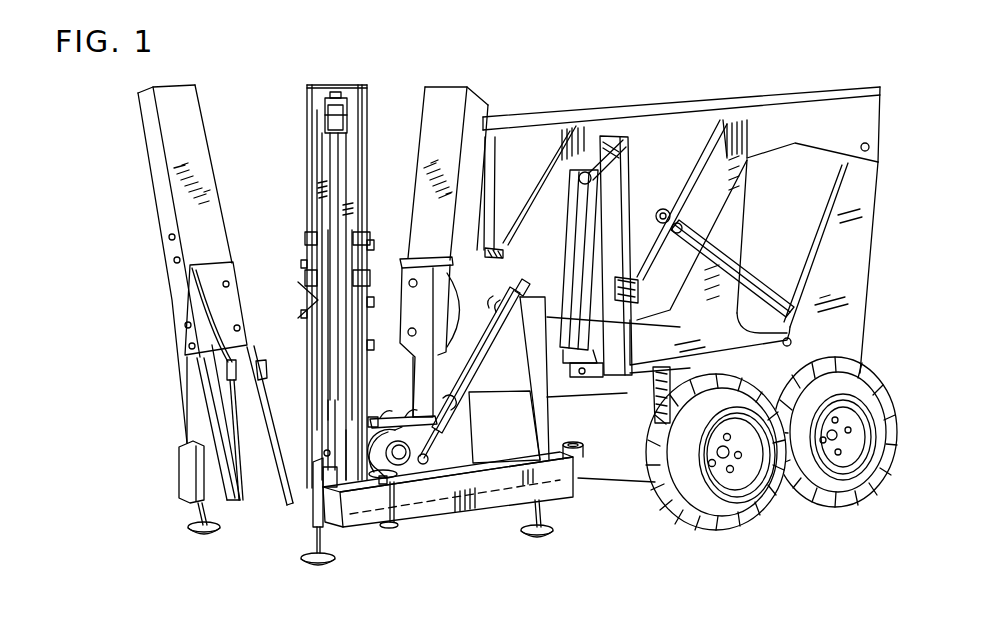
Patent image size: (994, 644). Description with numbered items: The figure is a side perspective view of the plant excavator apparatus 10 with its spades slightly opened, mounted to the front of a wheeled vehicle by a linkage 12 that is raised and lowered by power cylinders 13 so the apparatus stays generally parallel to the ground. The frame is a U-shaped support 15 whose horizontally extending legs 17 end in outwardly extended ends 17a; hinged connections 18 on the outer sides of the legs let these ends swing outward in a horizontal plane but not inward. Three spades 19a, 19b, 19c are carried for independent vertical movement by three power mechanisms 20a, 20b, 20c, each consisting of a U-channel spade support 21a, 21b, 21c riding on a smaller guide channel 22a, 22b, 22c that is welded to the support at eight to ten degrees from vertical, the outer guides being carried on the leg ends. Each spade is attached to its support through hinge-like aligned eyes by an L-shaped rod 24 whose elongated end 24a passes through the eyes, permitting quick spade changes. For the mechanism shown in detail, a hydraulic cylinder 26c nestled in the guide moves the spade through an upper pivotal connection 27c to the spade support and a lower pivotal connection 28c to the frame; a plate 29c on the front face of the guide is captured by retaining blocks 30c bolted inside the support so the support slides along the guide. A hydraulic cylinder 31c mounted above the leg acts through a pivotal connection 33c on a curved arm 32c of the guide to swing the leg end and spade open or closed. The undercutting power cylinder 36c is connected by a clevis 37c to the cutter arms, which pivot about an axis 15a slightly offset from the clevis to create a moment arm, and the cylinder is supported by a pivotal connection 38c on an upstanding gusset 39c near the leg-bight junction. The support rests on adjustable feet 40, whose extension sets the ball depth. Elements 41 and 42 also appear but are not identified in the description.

The plant excavator apparatus 10 is at (503, 42).
The linkage 12 is at (780, 94).
The power cylinders 13 is at (727, 308).
The U-shaped support 15 is at (558, 488).
The axis 15a is at (413, 465).
The legs 17 is at (480, 503).
The outwardly extended ends of the legs 17a is at (187, 470).
The hinged connections 18 is at (387, 530).
The spade 19a is at (268, 455).
The spade 19b is at (455, 403).
The spade 19c is at (213, 495).
The power mechanism 20a is at (153, 243).
The power mechanism 20b is at (495, 111).
The power mechanism 20c is at (409, 133).
The spade support 21a is at (200, 125).
The spade support 21b is at (457, 159).
The spade support 21c is at (360, 87).
The spade guide 22a is at (200, 417).
The spade guide 22b is at (450, 250).
The spade guide 22c is at (323, 416).
The L-shaped rods 24 is at (310, 300).
The elongated end of the L-shaped rod 24a is at (297, 378).
The hydraulic cylinder 26c is at (312, 300).
The upper pivotal connection 27c is at (333, 97).
The lower pivotal connection 28c is at (320, 497).
The plate 29c is at (318, 176).
The retaining blocks 30c is at (313, 207).
The hydraulic cylinder 31c is at (407, 463).
The curved arm 32c is at (370, 432).
The pivotal connection 33c is at (391, 412).
The power cylinder 36c is at (537, 358).
The clevis 37c is at (428, 433).
The pivotal connection 38c is at (550, 264).
The upstanding gusset 39c is at (532, 385).
The adjustable feet 40 is at (208, 531).
The stop block 41 is at (266, 378).
The cable 42 is at (236, 364).